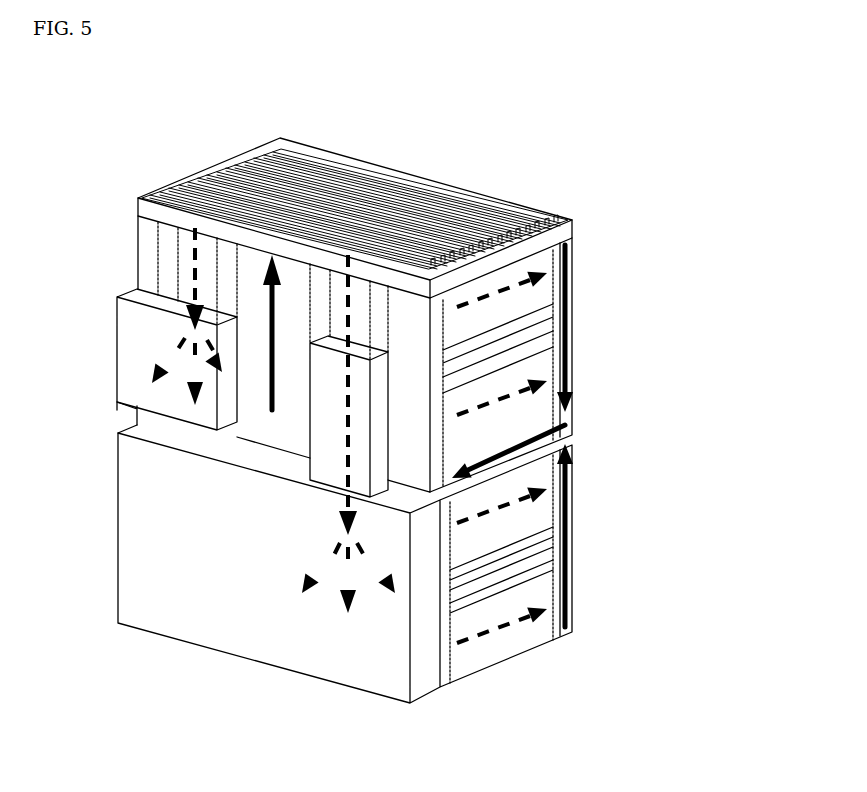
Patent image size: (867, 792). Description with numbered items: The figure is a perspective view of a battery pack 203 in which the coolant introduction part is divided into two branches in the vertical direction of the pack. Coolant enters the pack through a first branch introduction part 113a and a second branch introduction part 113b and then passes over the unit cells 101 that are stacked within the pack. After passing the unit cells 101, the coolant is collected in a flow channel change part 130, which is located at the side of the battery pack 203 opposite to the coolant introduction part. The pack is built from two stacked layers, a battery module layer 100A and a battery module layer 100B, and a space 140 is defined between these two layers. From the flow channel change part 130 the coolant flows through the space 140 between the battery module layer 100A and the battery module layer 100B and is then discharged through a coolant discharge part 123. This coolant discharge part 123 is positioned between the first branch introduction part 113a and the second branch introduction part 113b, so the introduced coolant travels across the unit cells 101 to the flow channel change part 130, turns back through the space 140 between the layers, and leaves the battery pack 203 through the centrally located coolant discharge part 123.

The battery pack 203 is at (61, 115).
The flow channel change part 130 is at (333, 162).
The first branch introduction part 113a is at (378, 270).
The second branch introduction part 113b is at (157, 263).
The unit cells 101 is at (540, 240).
The coolant discharge part 123 is at (240, 245).
The battery module layer 100B is at (582, 407).
The battery module layer 100A is at (585, 623).
The space 140 is at (137, 413).